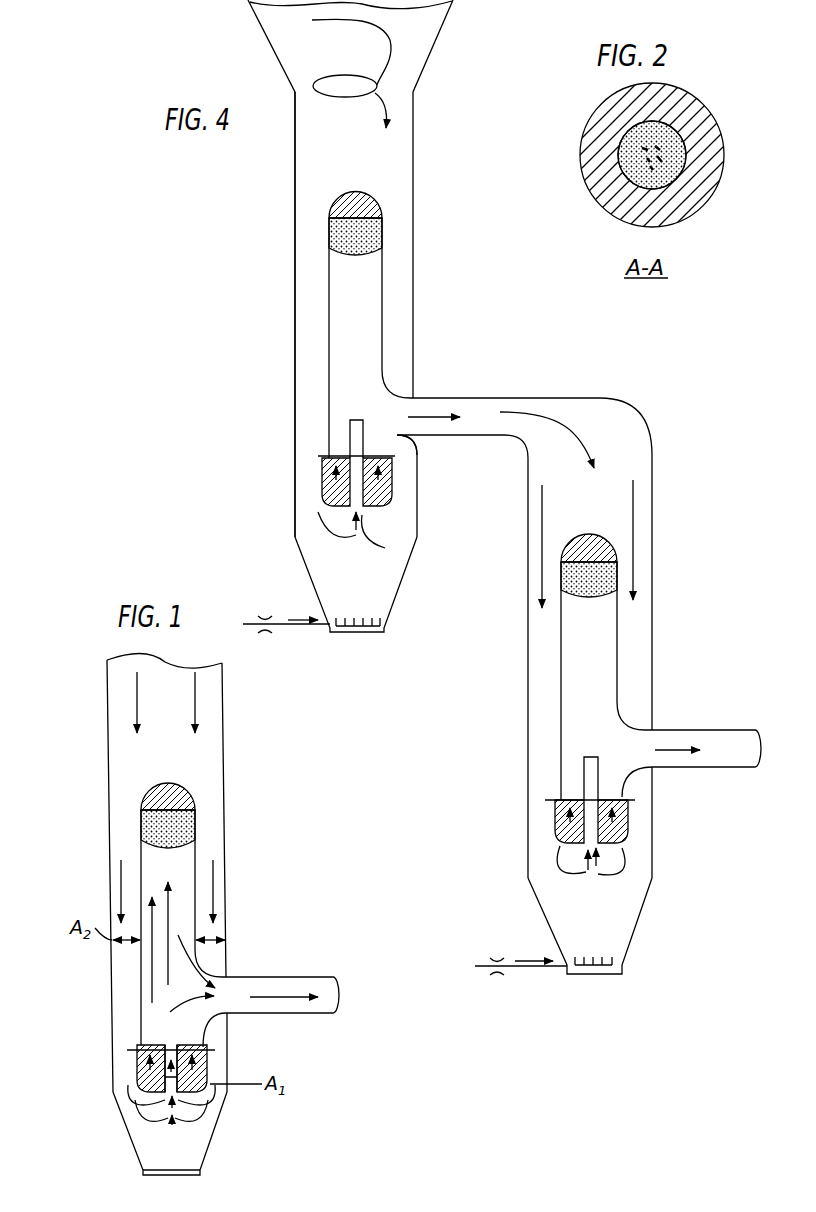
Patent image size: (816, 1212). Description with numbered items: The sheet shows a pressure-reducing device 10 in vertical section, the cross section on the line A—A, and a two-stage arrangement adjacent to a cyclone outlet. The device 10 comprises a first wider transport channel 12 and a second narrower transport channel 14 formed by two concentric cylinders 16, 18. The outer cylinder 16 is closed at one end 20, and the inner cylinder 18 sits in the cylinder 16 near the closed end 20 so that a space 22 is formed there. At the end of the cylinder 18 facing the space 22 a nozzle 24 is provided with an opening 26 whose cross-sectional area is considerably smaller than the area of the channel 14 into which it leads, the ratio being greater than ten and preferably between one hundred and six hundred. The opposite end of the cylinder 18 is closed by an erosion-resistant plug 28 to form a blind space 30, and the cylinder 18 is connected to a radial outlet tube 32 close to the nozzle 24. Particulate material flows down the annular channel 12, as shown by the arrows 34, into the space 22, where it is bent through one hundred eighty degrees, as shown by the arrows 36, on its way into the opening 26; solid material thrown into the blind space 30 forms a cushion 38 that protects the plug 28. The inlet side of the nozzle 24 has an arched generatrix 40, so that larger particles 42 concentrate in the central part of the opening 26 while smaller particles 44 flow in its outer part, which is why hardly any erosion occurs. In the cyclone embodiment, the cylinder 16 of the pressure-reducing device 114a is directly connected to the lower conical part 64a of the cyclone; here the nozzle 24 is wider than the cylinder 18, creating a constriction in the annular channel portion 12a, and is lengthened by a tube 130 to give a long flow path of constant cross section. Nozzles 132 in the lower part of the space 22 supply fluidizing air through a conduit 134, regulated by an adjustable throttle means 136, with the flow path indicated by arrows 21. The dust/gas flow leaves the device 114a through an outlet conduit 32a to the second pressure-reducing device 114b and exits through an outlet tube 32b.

In FIG. 1, the pressure-reducing device 10 is at (312, 852).
In FIG. 4, the first wider transport channel 12 is at (403, 293).
In FIG. 1, the first wider transport channel 12 is at (205, 850).
In FIG. 4, the annular channel portion 12a is at (400, 503).
In FIG. 4, the second narrower transport channel 14 is at (340, 370).
In FIG. 1, the second narrower transport channel 14 is at (150, 962).
In FIG. 4, the cylinder 16 is at (294, 300).
In FIG. 1, the cylinder 16 is at (226, 915).
In FIG. 4, the cylinder 18 is at (330, 330).
In FIG. 1, the cylinder 18 is at (200, 930).
In FIG. 4, the closed end 20 is at (308, 580).
In FIG. 1, the closed end 20 is at (215, 1135).
In FIG. 4, the flow path arrows 21 is at (550, 858).
In FIG. 4, the space 22 is at (378, 590).
In FIG. 1, the space 22 is at (160, 1140).
In FIG. 4, the nozzle 24 is at (321, 482).
In FIG. 2, the nozzle 24 is at (690, 212).
In FIG. 1, the nozzle 24 is at (210, 1072).
In FIG. 4, the opening 26 is at (352, 508).
In FIG. 2, the opening 26 is at (680, 172).
In FIG. 1, the opening 26 is at (175, 1045).
In FIG. 4, the plug 28 is at (328, 200).
In FIG. 1, the plug 28 is at (190, 800).
In FIG. 4, the blind space 30 is at (338, 265).
In FIG. 1, the blind space 30 is at (165, 870).
In FIG. 1, the radial outlet tube 32 is at (293, 976).
In FIG. 4, the outlet conduit 32a is at (510, 398).
In FIG. 4, the outlet tube 32b is at (718, 770).
In FIG. 1, the arrows 34 is at (230, 880).
In FIG. 1, the arrows 36 is at (210, 1105).
In FIG. 4, the cushion 38 is at (328, 234).
In FIG. 1, the cushion 38 is at (141, 822).
In FIG. 4, the generatrix 40 is at (335, 495).
In FIG. 1, the generatrix 40 is at (150, 1095).
In FIG. 2, the larger particles 42 is at (640, 150).
In FIG. 2, the smaller particles 44 is at (640, 178).
In FIG. 4, the lower conical part 64a is at (430, 52).
In FIG. 4, the pressure-reducing device 114a is at (268, 356).
In FIG. 4, the pressure-reducing device 114b is at (668, 554).
In FIG. 4, the tube 130 is at (347, 418).
In FIG. 4, the nozzles 132 is at (385, 622).
In FIG. 4, the conduit 134 is at (310, 628).
In FIG. 4, the adjustable throttle means 136 is at (270, 637).